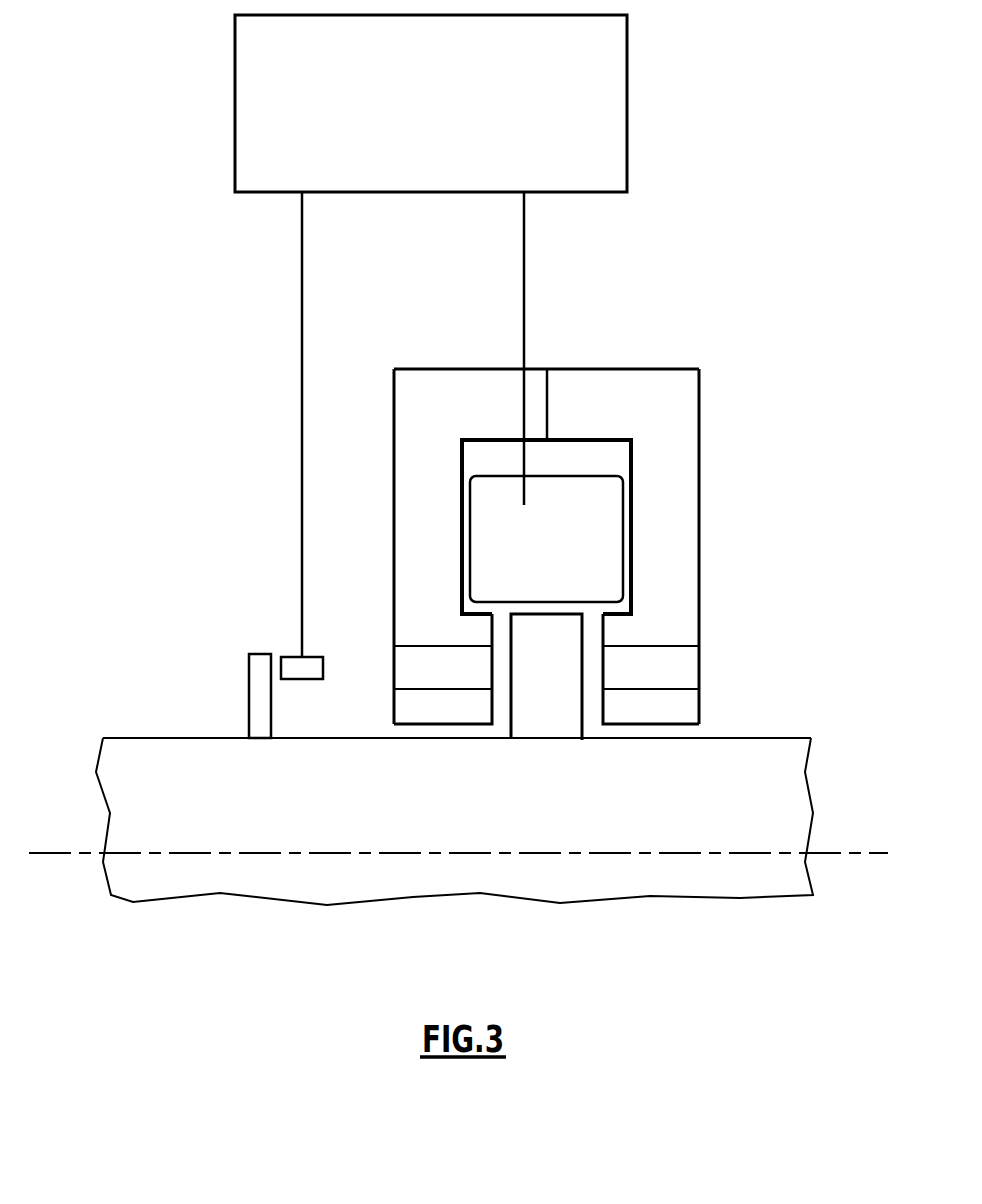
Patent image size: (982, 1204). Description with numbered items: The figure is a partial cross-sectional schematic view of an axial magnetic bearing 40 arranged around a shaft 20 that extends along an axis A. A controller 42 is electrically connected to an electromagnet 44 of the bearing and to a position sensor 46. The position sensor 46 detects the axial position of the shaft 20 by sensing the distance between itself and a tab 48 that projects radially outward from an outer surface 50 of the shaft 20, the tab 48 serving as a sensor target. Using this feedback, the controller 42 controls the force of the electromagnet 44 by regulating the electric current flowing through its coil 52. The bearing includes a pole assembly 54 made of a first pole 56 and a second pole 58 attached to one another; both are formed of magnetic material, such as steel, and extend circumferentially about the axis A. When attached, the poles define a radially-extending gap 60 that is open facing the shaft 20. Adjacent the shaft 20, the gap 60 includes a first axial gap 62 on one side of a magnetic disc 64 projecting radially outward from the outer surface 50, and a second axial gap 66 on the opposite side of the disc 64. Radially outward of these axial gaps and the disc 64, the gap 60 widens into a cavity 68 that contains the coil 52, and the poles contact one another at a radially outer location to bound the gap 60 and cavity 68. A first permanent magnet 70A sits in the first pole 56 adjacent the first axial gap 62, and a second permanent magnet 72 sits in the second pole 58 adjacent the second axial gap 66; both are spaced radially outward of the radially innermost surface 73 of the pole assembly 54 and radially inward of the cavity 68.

The shaft 20 is at (424, 877).
The axial magnetic bearing 40 is at (564, 491).
The controller 42 is at (417, 114).
The electromagnet 44 is at (590, 470).
The position sensor 46 is at (305, 679).
The tab 48 is at (258, 679).
The outer surface 50 is at (142, 737).
The coil 52 is at (490, 570).
The pole assembly 54 is at (705, 497).
The first pole 56 is at (445, 400).
The second pole 58 is at (657, 388).
The gap 60 is at (591, 722).
The first axial gap 62 is at (503, 675).
The disc 64 is at (543, 713).
The second axial gap 66 is at (590, 678).
The cavity 68 is at (551, 457).
The first permanent magnet 70A is at (405, 663).
The second permanent magnet 72 is at (680, 676).
The radially innermost surface 73 is at (413, 740).
The axis A is at (862, 853).